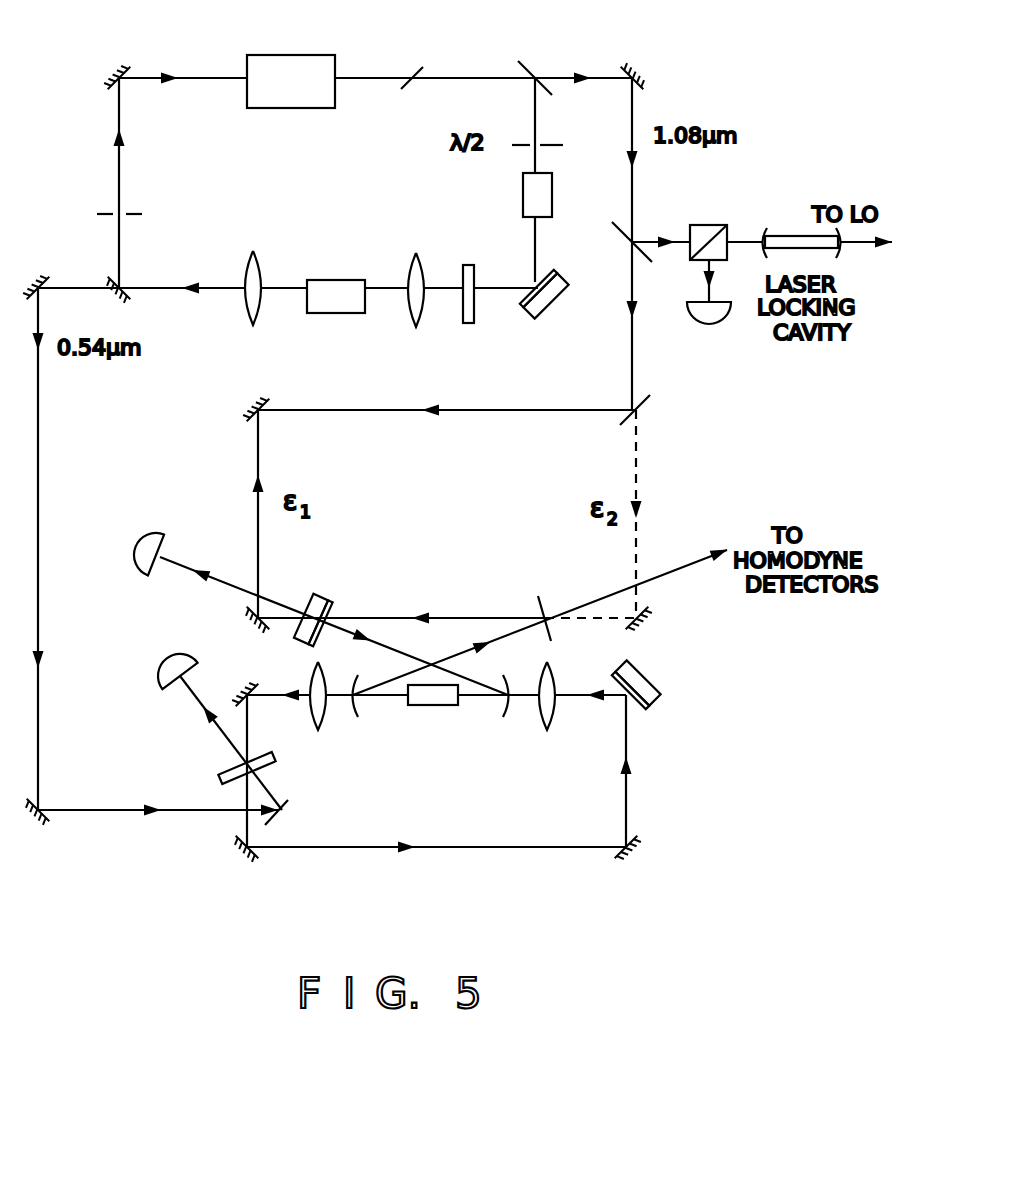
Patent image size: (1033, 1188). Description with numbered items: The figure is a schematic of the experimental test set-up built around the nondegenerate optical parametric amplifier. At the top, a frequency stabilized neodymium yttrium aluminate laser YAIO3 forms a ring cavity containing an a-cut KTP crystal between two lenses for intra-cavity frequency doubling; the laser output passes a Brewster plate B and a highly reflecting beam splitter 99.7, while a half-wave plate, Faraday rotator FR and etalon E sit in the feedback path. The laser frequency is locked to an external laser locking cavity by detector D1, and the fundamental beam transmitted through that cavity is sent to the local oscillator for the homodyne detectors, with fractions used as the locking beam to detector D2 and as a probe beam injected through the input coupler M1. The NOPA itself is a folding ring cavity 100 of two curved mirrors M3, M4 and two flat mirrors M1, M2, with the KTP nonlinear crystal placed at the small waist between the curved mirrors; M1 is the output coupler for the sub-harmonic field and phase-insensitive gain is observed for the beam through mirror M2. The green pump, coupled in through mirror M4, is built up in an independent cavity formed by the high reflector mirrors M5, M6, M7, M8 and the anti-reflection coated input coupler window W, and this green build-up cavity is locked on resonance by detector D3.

The ring cavity / optical parametric oscillator 100 is at (461, 593).
The flat mirror / input coupler M1 is at (536, 607).
The flat mirror M2 is at (330, 609).
The curved mirror M3 is at (359, 712).
The curved mirror M4 is at (508, 712).
The high reflector mirror M5 is at (652, 696).
The high reflector mirror M6 is at (633, 869).
The high reflector mirror M7 is at (249, 866).
The high reflector mirror M8 is at (249, 679).
The detector D1 is at (709, 309).
The detector D2 is at (145, 536).
The detector D3 is at (159, 669).
The input coupler window W is at (234, 768).
The Brewster plate B is at (412, 65).
The etalon E is at (467, 281).
The Faraday rotator FR is at (516, 195).
The KTP crystal KTP is at (382, 507).
The Nd:YAlO3 laser YAIO3 is at (291, 81).
The 99.7% reflecting beam splitter 99.7 is at (538, 65).